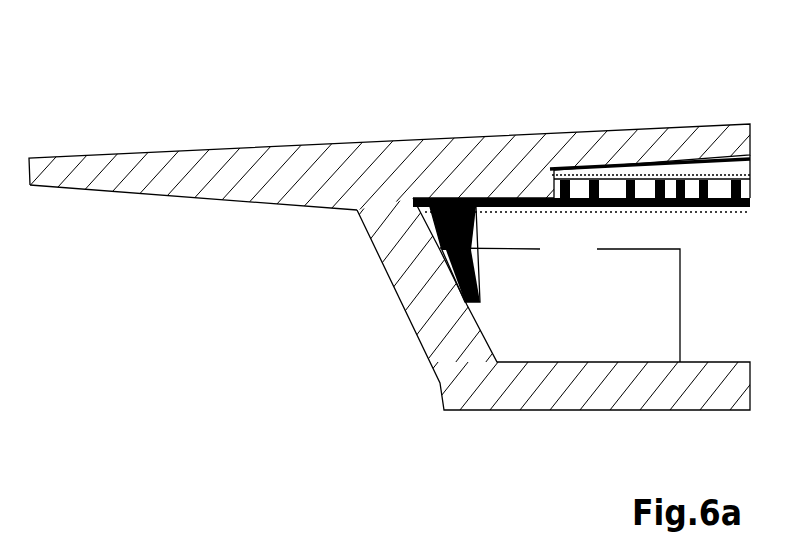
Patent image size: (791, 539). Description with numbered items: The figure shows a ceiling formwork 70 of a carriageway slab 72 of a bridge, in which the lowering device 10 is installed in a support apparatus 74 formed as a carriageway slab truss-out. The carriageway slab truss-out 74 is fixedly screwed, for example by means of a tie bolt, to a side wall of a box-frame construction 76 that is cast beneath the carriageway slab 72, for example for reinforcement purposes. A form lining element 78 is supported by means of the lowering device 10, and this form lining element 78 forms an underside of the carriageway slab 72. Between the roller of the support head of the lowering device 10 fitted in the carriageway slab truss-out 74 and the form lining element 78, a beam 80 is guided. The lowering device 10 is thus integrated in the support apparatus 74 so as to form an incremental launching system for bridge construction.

The lowering device 10 is at (450, 268).
The ceiling formwork 70 is at (670, 168).
The carriageway slab 72 is at (408, 163).
The support apparatus 74 is at (477, 287).
The box-frame construction 76 is at (450, 390).
The form lining element 78 is at (483, 193).
The beam 80 is at (443, 238).